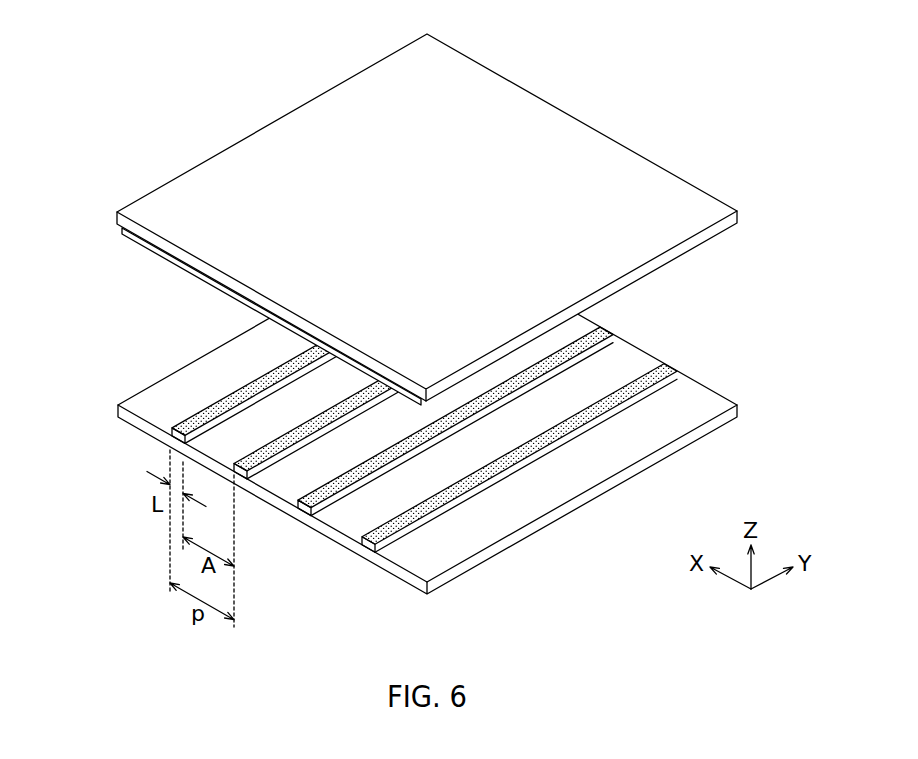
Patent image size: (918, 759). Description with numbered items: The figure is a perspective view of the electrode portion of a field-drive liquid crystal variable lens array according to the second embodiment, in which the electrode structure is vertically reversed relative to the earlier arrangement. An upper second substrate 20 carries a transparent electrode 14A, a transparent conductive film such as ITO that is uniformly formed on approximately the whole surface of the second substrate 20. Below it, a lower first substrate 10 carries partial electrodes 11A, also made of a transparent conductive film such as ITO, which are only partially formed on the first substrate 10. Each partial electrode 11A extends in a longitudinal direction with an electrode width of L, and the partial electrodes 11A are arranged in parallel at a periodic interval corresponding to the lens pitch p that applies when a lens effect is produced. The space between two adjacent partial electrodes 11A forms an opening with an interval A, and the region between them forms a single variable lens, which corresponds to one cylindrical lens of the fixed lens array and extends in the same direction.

The first substrate 10 is at (473, 565).
The partial electrode 11A is at (366, 552).
The second substrate 20 is at (115, 216).
The transparent electrode 14A is at (170, 262).